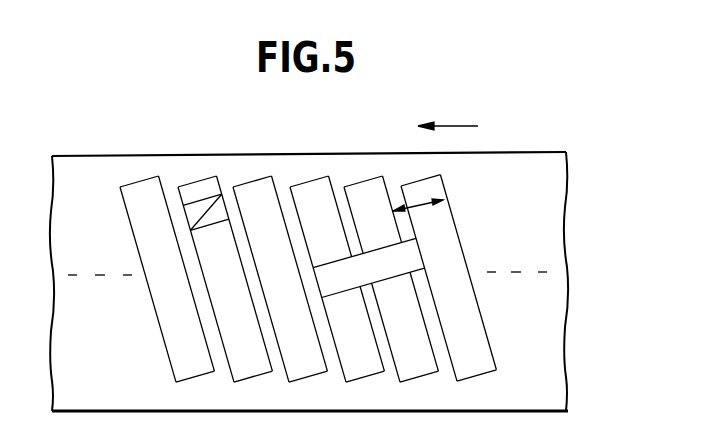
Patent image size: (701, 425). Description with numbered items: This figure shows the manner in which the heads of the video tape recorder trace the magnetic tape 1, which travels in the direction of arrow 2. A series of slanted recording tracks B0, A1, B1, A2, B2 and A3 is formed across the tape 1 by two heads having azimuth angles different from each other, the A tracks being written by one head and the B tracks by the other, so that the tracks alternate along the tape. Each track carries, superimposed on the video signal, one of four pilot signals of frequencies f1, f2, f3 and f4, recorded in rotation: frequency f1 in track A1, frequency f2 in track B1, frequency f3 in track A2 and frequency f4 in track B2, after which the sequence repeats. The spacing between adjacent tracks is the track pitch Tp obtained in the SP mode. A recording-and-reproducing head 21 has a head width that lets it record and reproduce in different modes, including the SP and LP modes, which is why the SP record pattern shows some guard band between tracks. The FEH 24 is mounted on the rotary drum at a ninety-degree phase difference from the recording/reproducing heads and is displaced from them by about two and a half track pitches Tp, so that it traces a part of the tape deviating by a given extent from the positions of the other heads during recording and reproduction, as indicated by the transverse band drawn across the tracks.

The magnetic tape 1 is at (512, 160).
The arrow 2 is at (455, 126).
The recording track B0 is at (139, 188).
The recording track A1 is at (195, 187).
The recording-and-reproducing head 21 is at (222, 207).
The recording track B1 is at (258, 183).
The recording track A2 is at (308, 187).
The recording track B2 is at (367, 188).
The recording track A3 is at (415, 188).
The FEH 24 is at (392, 270).
The track pitch Tp is at (425, 211).
The pilot signal frequency f1 is at (357, 366).
The pilot signal frequency f2 is at (299, 366).
The pilot signal frequency f3 is at (357, 366).
The pilot signal frequency f4 is at (299, 366).